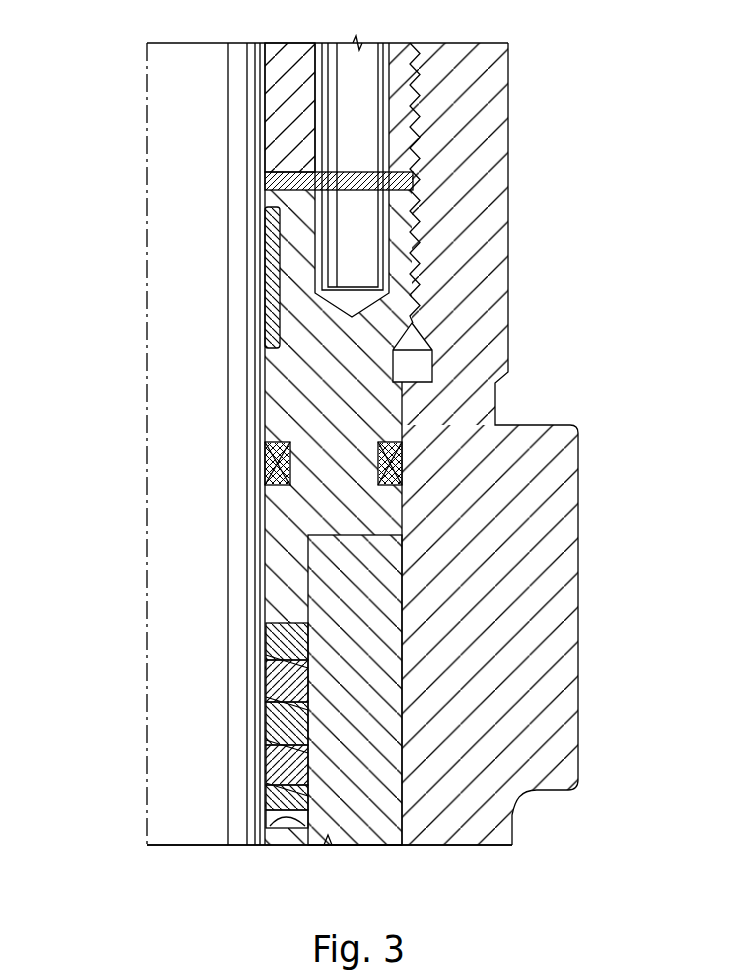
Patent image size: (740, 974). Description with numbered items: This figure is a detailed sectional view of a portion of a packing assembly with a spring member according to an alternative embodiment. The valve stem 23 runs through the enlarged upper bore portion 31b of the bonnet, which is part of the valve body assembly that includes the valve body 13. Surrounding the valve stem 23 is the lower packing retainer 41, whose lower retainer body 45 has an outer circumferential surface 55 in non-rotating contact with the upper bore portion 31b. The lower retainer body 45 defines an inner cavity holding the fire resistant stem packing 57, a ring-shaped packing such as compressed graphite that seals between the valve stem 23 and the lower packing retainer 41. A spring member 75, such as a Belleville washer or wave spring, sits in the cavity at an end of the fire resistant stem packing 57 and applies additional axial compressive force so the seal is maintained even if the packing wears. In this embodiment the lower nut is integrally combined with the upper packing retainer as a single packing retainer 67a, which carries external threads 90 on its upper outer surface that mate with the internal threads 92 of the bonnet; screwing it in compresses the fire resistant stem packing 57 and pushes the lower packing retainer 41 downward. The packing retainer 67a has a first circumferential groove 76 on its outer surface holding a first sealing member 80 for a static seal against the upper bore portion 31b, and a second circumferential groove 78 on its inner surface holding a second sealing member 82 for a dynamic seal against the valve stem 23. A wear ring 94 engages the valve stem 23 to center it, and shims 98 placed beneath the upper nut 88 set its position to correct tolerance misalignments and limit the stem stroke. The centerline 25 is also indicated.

The valve stem 23 is at (180, 65).
The centerline 25 is at (147, 203).
The upper nut 88 is at (280, 43).
The shims 98 is at (395, 177).
The internal threads 92 is at (420, 218).
The external threads 90 is at (413, 287).
The wear ring 94 is at (270, 283).
The second circumferential groove 78 is at (282, 452).
The second sealing member 82 is at (282, 470).
The packing retainer 67a is at (497, 408).
The first sealing member 80 is at (405, 449).
The first circumferential groove 76 is at (405, 467).
The lower retainer body 45 is at (385, 580).
The valve body 13 is at (553, 625).
The outer circumferential surface 55 is at (402, 687).
The upper bore portion 31b is at (380, 745).
The lower packing retainer 41 is at (380, 846).
The fire resistant stem packing 57 is at (266, 690).
The spring member 75 is at (266, 822).